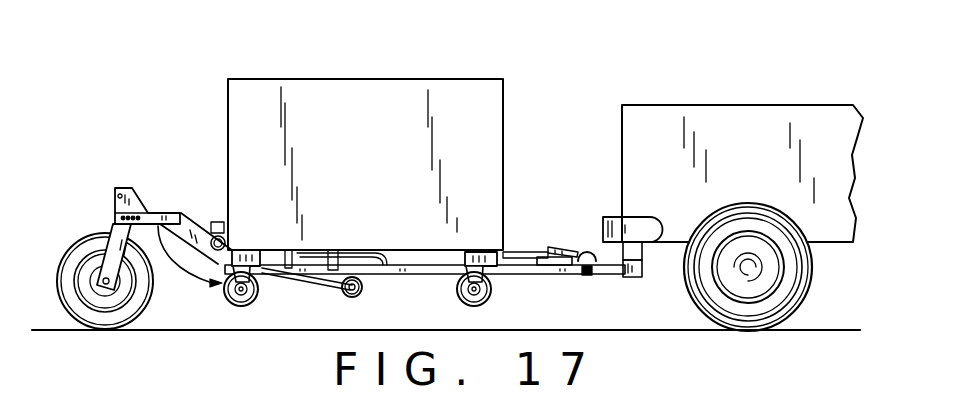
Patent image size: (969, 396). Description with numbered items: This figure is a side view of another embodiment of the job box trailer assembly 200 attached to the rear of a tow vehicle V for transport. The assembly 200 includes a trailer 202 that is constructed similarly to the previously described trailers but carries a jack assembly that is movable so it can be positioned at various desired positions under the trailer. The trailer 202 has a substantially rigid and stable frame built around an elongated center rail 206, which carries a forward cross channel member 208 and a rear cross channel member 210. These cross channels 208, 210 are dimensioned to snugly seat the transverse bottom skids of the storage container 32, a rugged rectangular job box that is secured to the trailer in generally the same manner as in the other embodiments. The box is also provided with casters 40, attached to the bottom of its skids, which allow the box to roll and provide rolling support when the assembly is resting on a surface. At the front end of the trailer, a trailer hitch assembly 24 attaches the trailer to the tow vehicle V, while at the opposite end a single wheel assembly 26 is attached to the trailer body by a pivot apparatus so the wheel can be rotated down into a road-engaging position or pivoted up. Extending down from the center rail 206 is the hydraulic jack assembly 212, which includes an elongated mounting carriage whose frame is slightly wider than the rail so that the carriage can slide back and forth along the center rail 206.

The single wheel assembly 26 is at (85, 242).
The trailer 202 is at (172, 265).
The storage container 32 is at (428, 88).
The job box trailer assembly 200 is at (535, 129).
The forward cross channel member 208 is at (502, 258).
The trailer hitch assembly 24 is at (571, 252).
The tow vehicle V is at (705, 117).
The casters 40 is at (232, 303).
The rear cross channel member 210 is at (268, 274).
The hydraulic jack assembly 212 is at (378, 274).
The elongated center rail 206 is at (435, 278).